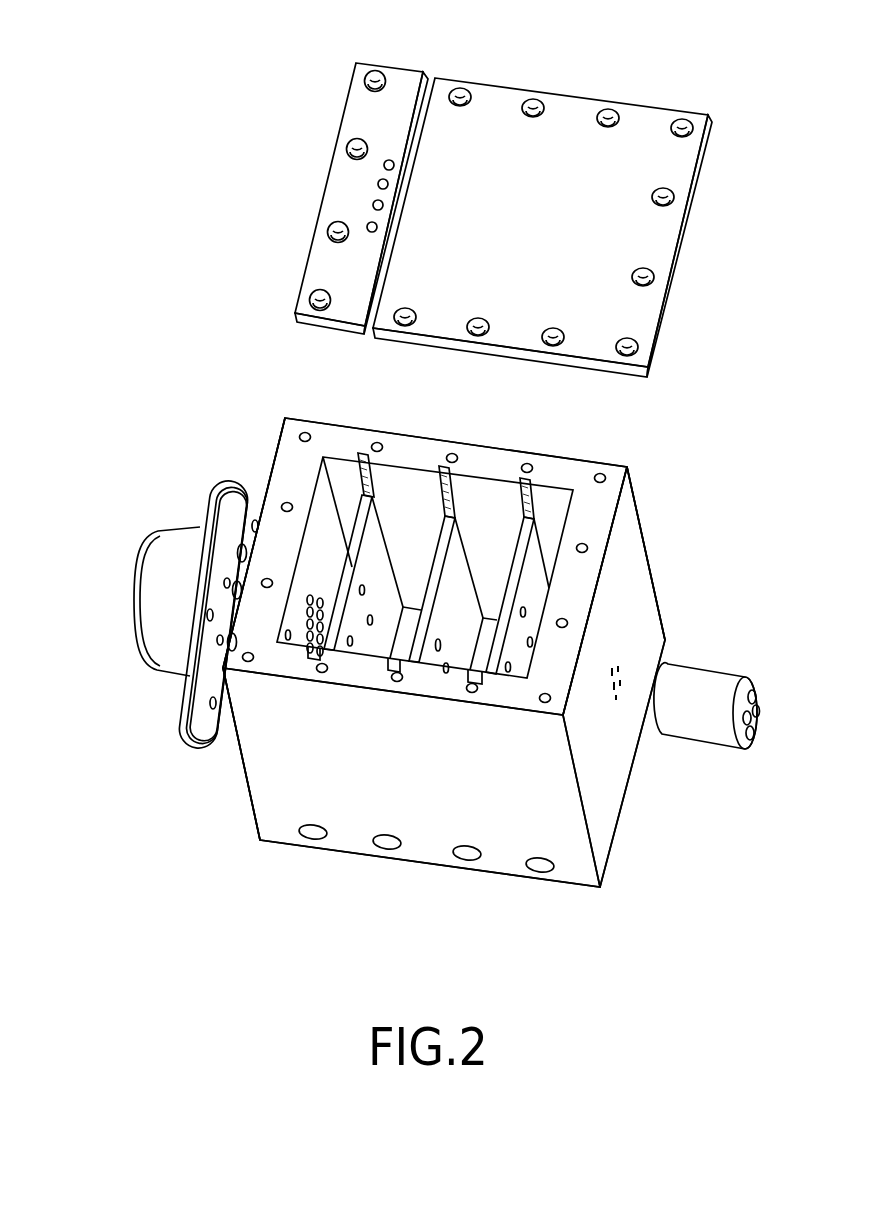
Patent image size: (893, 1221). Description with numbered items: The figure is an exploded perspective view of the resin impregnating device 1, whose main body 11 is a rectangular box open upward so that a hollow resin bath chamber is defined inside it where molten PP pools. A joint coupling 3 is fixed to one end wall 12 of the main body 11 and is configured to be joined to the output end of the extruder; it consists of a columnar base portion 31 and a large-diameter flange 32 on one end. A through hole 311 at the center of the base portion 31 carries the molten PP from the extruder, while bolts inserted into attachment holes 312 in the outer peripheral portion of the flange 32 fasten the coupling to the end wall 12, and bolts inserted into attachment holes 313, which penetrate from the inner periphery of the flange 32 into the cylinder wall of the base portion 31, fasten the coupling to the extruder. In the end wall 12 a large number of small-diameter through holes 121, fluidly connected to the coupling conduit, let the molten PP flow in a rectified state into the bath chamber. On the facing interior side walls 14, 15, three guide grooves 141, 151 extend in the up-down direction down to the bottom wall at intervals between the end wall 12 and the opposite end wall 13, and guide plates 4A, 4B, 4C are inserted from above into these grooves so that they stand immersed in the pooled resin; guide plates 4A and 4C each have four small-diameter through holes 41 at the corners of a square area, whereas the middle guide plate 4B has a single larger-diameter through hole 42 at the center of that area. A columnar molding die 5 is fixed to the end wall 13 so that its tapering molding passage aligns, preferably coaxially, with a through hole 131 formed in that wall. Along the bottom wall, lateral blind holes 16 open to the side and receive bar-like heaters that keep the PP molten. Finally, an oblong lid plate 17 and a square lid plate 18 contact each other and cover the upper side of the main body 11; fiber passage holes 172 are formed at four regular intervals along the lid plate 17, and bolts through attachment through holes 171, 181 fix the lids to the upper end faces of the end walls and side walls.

The resin impregnating device 1 is at (662, 455).
The joint coupling 3 is at (201, 621).
The guide plate 4A is at (378, 548).
The guide plate 4B is at (460, 578).
The guide plate 4C is at (537, 590).
The molding die 5 is at (708, 681).
The main body 11 is at (647, 553).
The end wall 12 is at (252, 818).
The end wall 13 is at (607, 820).
The side wall 14 is at (592, 463).
The side wall 15 is at (435, 825).
The lateral blind holes 16 is at (313, 832).
The lid plate 17 is at (396, 68).
The lid plate 18 is at (563, 95).
The base portion 31 is at (152, 635).
The flange 32 is at (188, 712).
The small-diameter through holes 41 is at (363, 588).
The larger-diameter through hole 42 is at (440, 642).
The through holes 121 is at (320, 627).
The through hole 131 is at (617, 675).
The guide grooves 141 is at (364, 458).
The guide grooves 151 is at (397, 675).
The attachment through holes 171 is at (353, 148).
The fiber passage holes 172 is at (390, 160).
The attachment through holes 181 is at (458, 93).
The through hole 311 is at (270, 603).
The attachment holes 312 is at (255, 528).
The attachment holes 313 is at (227, 585).